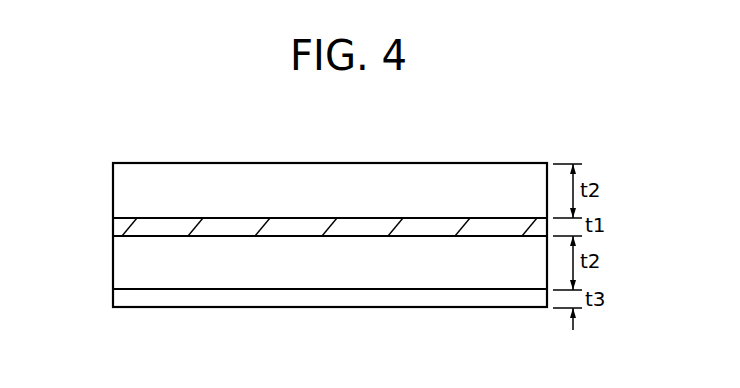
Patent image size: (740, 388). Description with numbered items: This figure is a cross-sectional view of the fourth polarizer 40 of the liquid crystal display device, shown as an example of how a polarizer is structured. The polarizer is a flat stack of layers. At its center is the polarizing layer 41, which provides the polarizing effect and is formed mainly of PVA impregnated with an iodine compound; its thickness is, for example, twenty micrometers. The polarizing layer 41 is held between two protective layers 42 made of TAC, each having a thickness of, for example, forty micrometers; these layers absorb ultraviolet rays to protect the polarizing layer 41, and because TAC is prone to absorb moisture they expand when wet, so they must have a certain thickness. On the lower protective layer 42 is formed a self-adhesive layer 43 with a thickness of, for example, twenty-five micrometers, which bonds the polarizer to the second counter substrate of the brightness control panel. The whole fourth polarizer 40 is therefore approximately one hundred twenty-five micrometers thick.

The fourth polarizer 40 is at (118, 134).
The polarizing layer 41 is at (122, 225).
The protective layer 42 is at (120, 190).
The self-adhesive layer 43 is at (120, 299).